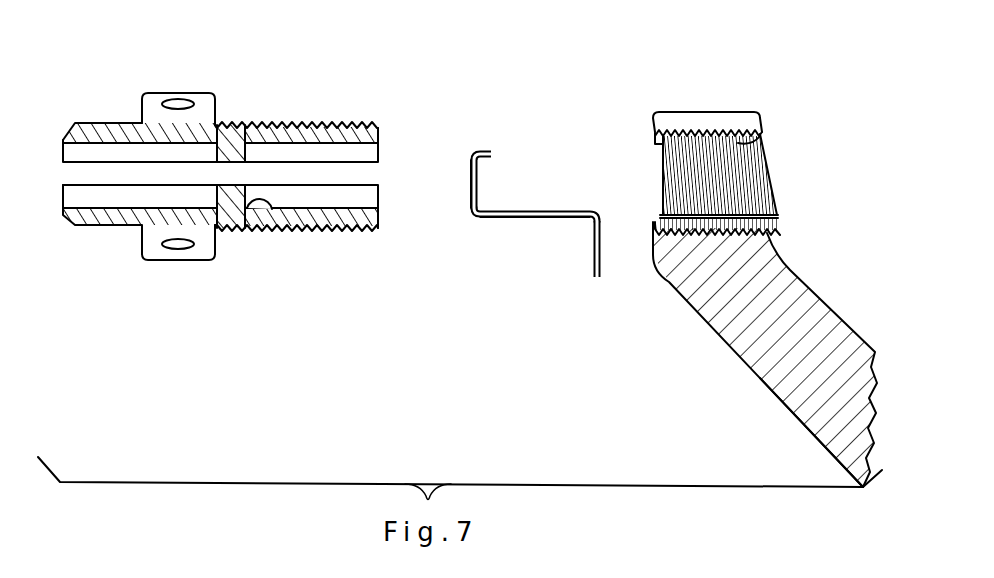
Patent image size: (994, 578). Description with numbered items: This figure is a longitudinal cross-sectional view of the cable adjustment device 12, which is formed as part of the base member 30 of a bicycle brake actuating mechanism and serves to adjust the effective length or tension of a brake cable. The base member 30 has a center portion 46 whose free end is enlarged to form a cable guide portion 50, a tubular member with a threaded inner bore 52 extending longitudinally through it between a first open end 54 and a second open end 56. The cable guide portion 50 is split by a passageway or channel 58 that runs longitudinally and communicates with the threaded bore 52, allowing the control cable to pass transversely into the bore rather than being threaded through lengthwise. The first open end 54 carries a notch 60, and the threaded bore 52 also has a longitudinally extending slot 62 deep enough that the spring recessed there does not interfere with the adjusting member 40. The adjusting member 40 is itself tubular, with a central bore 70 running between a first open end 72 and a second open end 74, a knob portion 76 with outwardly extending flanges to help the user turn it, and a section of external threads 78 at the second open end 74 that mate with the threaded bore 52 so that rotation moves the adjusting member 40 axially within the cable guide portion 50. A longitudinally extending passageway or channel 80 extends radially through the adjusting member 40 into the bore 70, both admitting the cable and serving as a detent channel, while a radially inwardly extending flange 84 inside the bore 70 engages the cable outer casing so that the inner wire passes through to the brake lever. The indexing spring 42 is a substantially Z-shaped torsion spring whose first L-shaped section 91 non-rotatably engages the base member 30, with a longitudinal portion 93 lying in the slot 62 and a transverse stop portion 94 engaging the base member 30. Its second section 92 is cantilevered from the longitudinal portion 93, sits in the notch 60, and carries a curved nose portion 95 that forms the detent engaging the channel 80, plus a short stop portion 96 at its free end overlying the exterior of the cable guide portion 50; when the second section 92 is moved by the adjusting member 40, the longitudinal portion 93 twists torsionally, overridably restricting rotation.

The cable adjustment device 12 is at (355, 342).
The base member 30 is at (767, 383).
The adjusting member 40 is at (91, 121).
The indexing spring 42 is at (526, 236).
The center portion 46 is at (832, 437).
The cable guide portion 50 is at (652, 127).
The threaded inner bore 52 is at (768, 146).
The first open end 54 is at (657, 135).
The second open end 56 is at (763, 133).
The passageway or channel 58 is at (713, 117).
The notch 60 is at (659, 150).
The longitudinally extending slot 62 is at (775, 214).
The central bore 70 is at (85, 207).
The first open end 72 is at (63, 147).
The second open end 74 is at (378, 140).
The knob portion 76 is at (170, 93).
The external threads 78 is at (302, 123).
The passageway or channel 80 is at (363, 185).
The radially inwardly extending flange 84 is at (273, 212).
The first L-shaped section 91 is at (557, 221).
The second section 92 is at (462, 189).
The longitudinal portion 93 is at (537, 211).
The transverse stop portion 94 is at (593, 253).
The curved nose portion 95 is at (478, 177).
The stop portion 96 is at (485, 150).